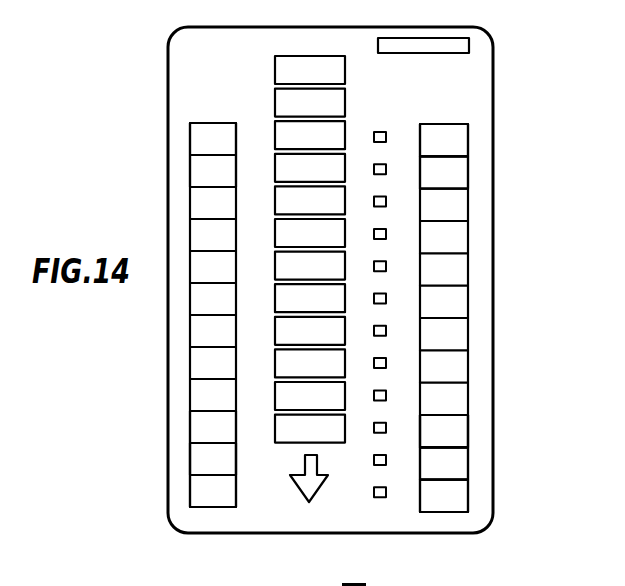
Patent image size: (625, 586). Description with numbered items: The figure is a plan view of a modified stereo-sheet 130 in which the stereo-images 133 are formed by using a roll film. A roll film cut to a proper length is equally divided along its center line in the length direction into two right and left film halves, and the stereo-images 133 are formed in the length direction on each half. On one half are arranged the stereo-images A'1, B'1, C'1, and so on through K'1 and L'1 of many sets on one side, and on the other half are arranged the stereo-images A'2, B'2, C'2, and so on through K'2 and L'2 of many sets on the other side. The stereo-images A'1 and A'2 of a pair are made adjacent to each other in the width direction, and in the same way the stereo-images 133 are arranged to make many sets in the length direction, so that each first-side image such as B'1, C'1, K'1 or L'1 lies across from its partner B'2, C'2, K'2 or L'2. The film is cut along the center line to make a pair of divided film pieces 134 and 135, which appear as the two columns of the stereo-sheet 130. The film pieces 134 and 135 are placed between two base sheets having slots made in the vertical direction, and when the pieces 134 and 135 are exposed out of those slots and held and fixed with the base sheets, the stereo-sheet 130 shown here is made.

The stereo-sheet 130 is at (288, 535).
The stereo-images 133 is at (202, 330).
The film piece 134 is at (455, 440).
The film piece 135 is at (200, 452).
The stereo-image L'2 is at (174, 139).
The stereo-image K'2 is at (170, 177).
The stereo-image C'2 is at (163, 428).
The stereo-image B'2 is at (163, 476).
The stereo-image A'2 is at (162, 513).
The stereo-image L'1 is at (490, 137).
The stereo-image K'1 is at (490, 177).
The stereo-image C'1 is at (484, 416).
The stereo-image B'1 is at (484, 464).
The stereo-image A'1 is at (482, 503).